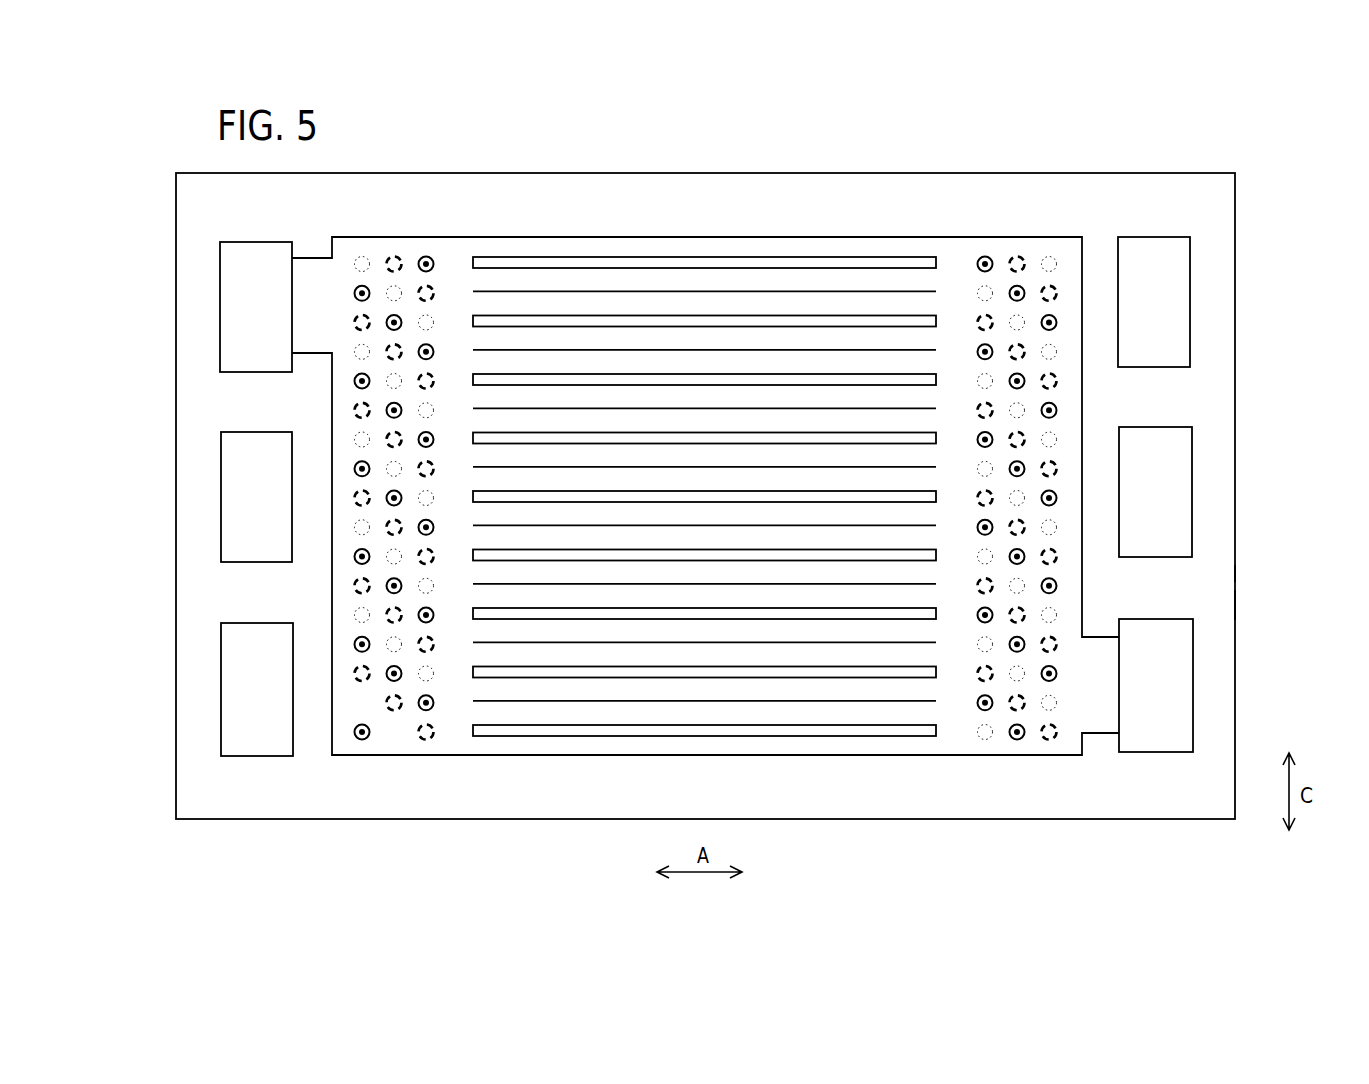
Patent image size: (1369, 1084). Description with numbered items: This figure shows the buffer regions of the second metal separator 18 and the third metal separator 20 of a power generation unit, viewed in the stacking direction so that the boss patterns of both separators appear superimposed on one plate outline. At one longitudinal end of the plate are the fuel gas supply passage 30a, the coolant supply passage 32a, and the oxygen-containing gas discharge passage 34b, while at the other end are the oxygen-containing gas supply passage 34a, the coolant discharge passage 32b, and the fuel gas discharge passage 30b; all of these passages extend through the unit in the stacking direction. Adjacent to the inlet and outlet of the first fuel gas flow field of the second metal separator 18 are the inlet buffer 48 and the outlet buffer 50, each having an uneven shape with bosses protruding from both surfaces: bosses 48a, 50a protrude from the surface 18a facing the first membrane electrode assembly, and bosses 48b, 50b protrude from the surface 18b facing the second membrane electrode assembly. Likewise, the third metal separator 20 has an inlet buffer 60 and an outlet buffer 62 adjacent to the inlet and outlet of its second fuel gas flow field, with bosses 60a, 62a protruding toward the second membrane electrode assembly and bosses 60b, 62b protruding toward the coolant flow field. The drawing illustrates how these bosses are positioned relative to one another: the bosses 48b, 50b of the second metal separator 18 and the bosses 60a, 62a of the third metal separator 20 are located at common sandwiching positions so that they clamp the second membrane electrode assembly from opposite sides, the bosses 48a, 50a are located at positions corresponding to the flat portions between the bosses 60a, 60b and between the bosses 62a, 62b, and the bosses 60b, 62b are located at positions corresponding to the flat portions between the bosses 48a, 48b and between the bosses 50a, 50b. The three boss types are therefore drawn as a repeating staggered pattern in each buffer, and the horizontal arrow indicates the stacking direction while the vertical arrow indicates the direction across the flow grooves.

The second metal separator 18 is at (705, 473).
The third metal separator 20 is at (1027, 168).
The inlet buffer 48 is at (464, 484).
The inlet buffer 60 is at (341, 248).
The bosses (second bosses) 48a is at (427, 255).
The bosses (first bosses) 48b is at (403, 498).
The bosses (second bosses) 60a is at (392, 256).
The bosses (third bosses) 60b is at (354, 436).
The outlet buffer 50 is at (941, 482).
The outlet buffer 62 is at (1067, 248).
The bosses (second bosses) 50a is at (1020, 286).
The bosses (first bosses) 50b is at (1089, 530).
The bosses (second bosses) 62a is at (1058, 378).
The bosses (third bosses) 62b is at (981, 286).
The fuel gas supply passage 30a is at (256, 307).
The fuel gas discharge passage 30b is at (1156, 685).
The coolant supply passage 32a is at (252, 515).
The coolant discharge passage 32b is at (1157, 505).
The oxygen-containing gas supply passage 34a is at (1154, 302).
The oxygen-containing gas discharge passage 34b is at (257, 689).
The surface 18a is at (1216, 598).
The surface 18b is at (1218, 573).